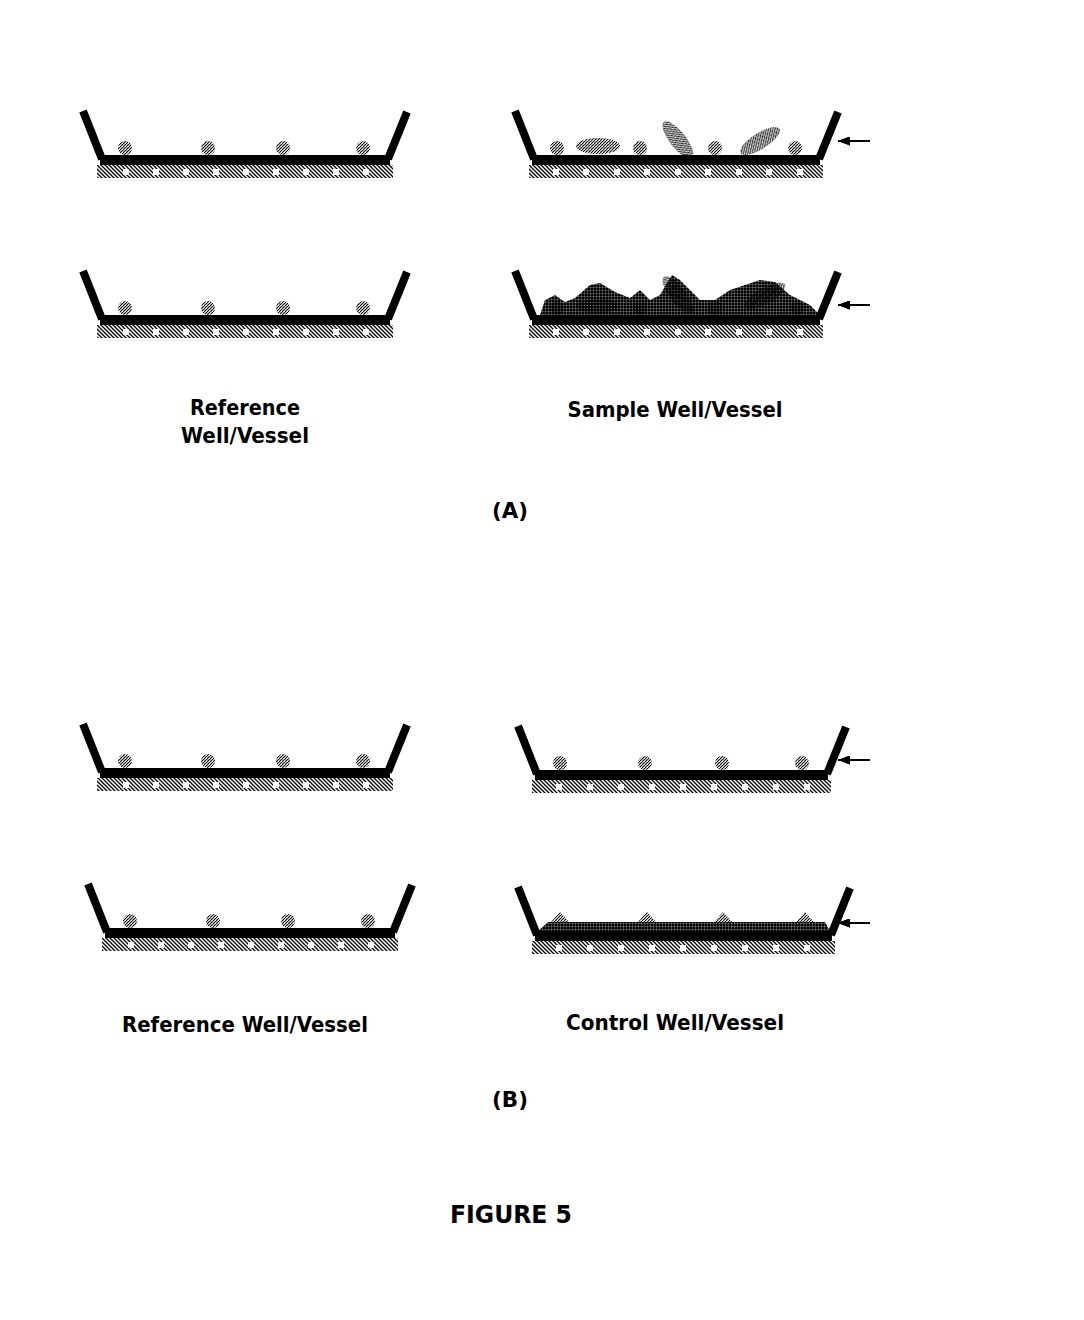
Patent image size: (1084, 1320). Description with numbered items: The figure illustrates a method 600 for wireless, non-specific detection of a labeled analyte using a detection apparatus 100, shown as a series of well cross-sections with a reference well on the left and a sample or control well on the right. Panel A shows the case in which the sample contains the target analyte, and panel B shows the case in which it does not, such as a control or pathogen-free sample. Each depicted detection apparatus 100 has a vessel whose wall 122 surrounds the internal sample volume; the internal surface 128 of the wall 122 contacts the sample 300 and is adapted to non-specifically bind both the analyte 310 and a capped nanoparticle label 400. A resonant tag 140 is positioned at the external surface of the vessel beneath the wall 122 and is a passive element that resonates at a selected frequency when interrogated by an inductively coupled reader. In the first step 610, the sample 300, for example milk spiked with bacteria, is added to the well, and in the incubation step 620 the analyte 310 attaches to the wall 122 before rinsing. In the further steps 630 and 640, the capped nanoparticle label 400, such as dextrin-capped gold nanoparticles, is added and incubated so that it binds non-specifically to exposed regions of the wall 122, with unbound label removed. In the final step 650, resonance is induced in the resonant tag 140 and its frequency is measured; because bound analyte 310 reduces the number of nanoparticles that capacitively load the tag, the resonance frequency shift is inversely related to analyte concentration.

The detection apparatus 100 is at (397, 97).
The method 600 is at (492, 73).
The wall 122 is at (525, 900).
The internal surface 128 is at (680, 930).
The resonant tag 140 is at (575, 949).
The sample 300 is at (568, 917).
The analyte 310 is at (762, 295).
The capped nanoparticle label 400 is at (770, 920).
The first step 610 is at (880, 434).
The incubation step 620 is at (876, 459).
The label addition step 630 is at (880, 586).
The label incubation step 640 is at (880, 601).
The resonance measurement step 650 is at (876, 629).